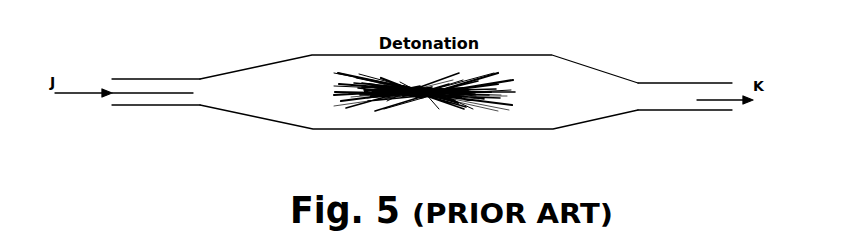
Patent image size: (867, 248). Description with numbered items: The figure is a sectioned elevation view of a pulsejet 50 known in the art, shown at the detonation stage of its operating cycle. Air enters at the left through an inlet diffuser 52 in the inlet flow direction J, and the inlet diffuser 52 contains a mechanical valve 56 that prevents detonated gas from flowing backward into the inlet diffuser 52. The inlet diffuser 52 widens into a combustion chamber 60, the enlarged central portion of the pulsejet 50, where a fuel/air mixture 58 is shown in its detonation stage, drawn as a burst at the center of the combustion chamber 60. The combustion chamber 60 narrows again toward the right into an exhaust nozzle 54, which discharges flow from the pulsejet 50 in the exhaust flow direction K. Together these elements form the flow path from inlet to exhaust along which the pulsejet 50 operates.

The pulsejet 50 is at (253, 117).
The inlet diffuser 52 is at (111, 96).
The exhaust nozzle 54 is at (687, 97).
The mechanical valve 56 is at (170, 95).
The fuel/air mixture 58 is at (387, 102).
The combustion chamber 60 is at (523, 113).